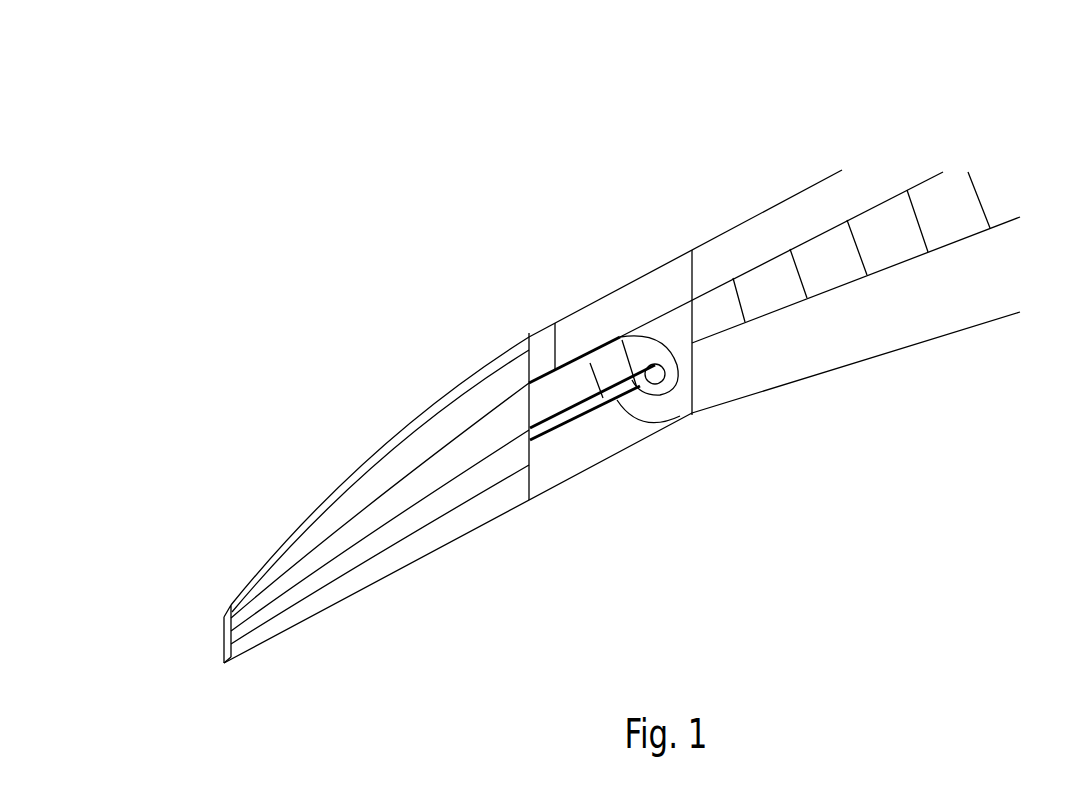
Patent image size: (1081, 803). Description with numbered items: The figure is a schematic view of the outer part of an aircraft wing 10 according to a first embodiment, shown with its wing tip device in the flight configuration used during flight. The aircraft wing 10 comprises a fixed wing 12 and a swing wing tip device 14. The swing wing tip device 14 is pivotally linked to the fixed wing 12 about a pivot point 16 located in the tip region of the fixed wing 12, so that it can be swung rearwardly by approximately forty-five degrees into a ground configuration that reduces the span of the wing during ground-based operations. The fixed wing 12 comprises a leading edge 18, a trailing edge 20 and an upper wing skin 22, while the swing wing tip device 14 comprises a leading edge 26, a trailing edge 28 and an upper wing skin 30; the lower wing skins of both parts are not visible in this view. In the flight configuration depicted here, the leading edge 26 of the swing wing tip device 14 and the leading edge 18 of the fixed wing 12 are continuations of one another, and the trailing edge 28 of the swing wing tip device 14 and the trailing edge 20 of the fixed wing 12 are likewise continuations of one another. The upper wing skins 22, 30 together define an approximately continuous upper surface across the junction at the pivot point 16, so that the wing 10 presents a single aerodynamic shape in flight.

The aircraft wing 10 is at (485, 143).
The fixed wing 12 is at (760, 270).
The swing wing tip device 14 is at (337, 527).
The pivot point 16 is at (660, 368).
The leading edge 18 is at (622, 272).
The trailing edge 20 is at (678, 418).
The upper wing skin 22 is at (708, 297).
The leading edge 26 is at (403, 427).
The trailing edge 28 is at (390, 575).
The upper wing skin 30 is at (452, 477).